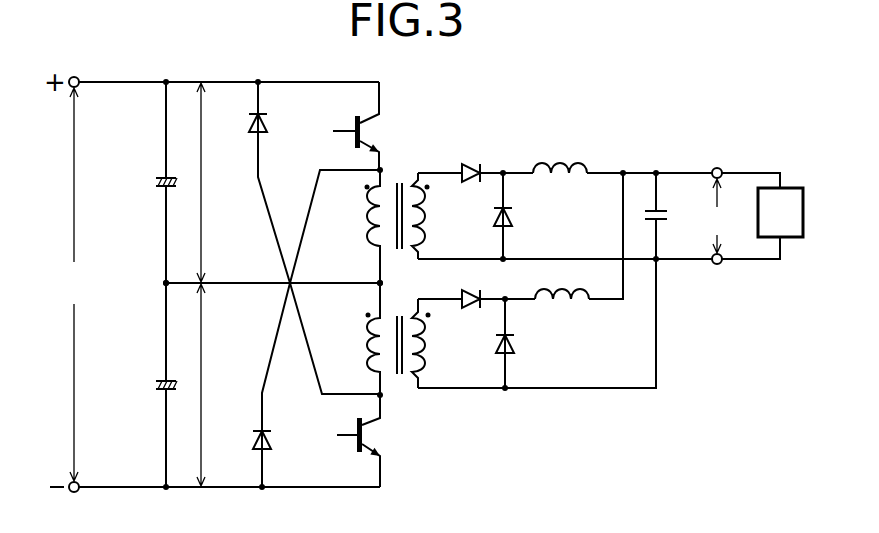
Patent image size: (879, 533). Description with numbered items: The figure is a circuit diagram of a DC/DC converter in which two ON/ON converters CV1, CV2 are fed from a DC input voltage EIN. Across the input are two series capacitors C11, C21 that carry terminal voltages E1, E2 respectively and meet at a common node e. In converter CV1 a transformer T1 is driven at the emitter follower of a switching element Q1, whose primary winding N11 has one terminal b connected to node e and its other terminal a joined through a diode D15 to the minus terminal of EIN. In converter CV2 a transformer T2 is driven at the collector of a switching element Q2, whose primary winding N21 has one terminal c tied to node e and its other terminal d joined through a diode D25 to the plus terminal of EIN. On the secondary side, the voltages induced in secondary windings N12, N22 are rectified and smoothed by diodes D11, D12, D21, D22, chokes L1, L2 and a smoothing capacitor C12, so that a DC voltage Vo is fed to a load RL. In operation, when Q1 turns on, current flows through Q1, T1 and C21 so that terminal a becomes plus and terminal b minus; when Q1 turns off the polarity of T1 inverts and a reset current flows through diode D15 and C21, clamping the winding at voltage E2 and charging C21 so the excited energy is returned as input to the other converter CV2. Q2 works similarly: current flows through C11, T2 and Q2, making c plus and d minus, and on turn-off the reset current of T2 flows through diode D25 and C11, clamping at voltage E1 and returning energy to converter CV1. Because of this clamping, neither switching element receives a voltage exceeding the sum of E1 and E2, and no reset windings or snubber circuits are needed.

The DC input voltage EIN is at (86, 284).
The capacitor C11 is at (148, 184).
The capacitor C21 is at (147, 385).
The terminal voltage of capacitor C11 E1 is at (201, 182).
The terminal voltage of capacitor C21 E2 is at (203, 385).
The node of capacitors C11 and C21 e is at (174, 293).
The diode D25 is at (314, 238).
The diode D15 is at (316, 328).
The switching element Q1 is at (368, 129).
The switching element Q2 is at (370, 441).
The transformer T1 is at (407, 215).
The transformer T2 is at (408, 338).
The primary winding N11 is at (360, 226).
The secondary winding N12 is at (444, 216).
The primary winding N21 is at (362, 339).
The secondary winding N22 is at (444, 343).
The terminal of primary winding N11 a is at (387, 176).
The terminal of primary winding N11 b is at (388, 264).
The terminal of primary winding N21 c is at (387, 300).
The terminal of primary winding N21 d is at (388, 385).
The converter CV1 is at (432, 129).
The converter CV2 is at (417, 414).
The diode D11 is at (480, 160).
The diode D12 is at (524, 216).
The diode D21 is at (482, 285).
The diode D22 is at (527, 343).
The choke L1 is at (560, 188).
The choke L2 is at (562, 312).
The smoothing capacitor C12 is at (676, 216).
The DC voltage Vo is at (723, 216).
The load RL is at (762, 216).